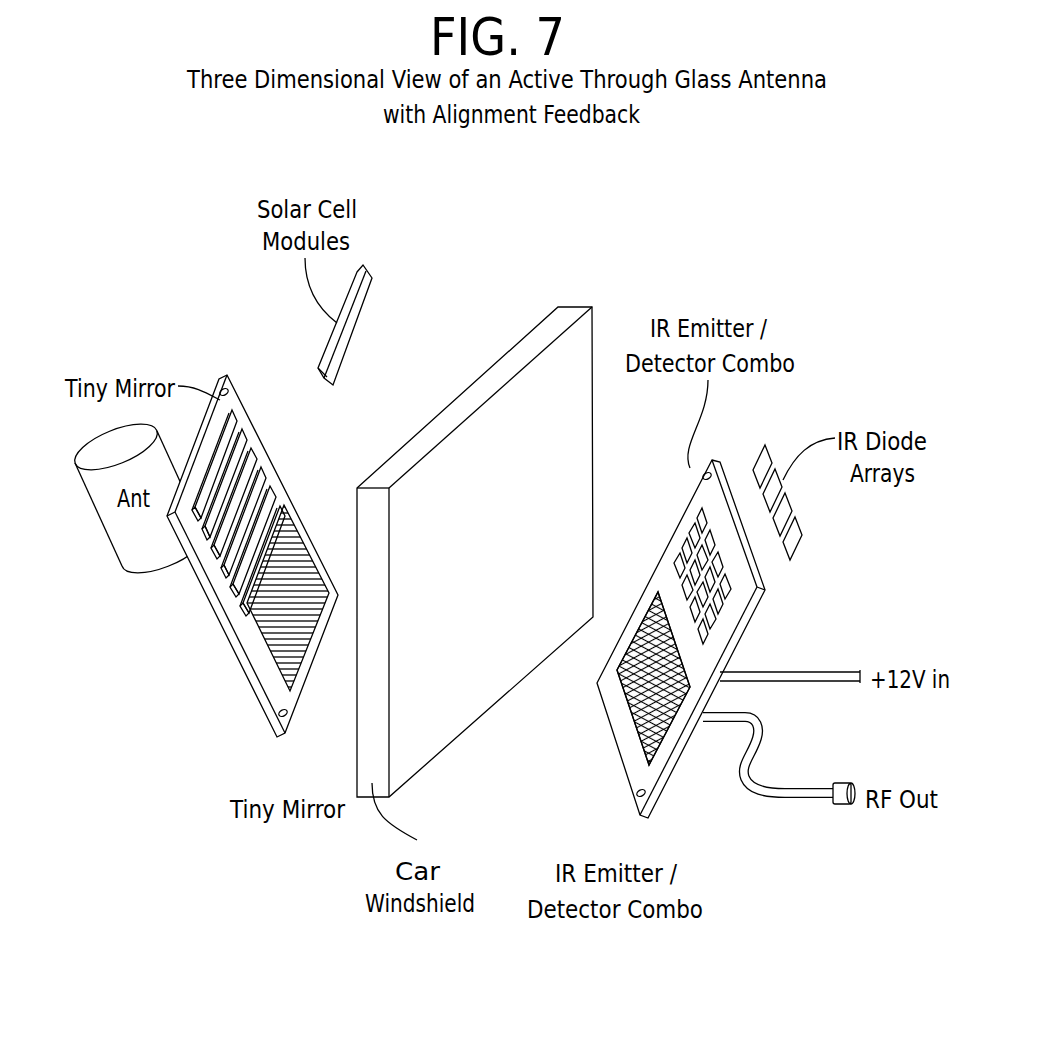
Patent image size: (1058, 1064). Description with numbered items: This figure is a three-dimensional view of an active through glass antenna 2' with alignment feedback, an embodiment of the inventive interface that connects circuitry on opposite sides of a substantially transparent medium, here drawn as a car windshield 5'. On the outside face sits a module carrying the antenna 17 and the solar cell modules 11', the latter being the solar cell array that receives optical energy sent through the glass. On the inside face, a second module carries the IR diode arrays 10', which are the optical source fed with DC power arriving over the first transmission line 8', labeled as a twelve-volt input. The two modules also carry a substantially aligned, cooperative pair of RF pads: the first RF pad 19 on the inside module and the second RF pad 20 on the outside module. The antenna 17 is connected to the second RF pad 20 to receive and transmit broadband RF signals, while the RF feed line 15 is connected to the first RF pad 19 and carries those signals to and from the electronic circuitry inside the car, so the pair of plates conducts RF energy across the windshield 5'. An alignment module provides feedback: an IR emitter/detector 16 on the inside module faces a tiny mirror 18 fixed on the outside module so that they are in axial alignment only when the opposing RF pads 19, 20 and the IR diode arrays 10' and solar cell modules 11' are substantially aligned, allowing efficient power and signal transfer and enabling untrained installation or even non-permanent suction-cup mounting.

The active through glass antenna 2' is at (660, 212).
The car windshield 5' is at (475, 552).
The first transmission line 8' is at (790, 701).
The IR diode arrays 10' is at (674, 576).
The solar cell modules 11' is at (255, 556).
The RF feed line 15 is at (795, 800).
The IR emitter/detector 16 is at (640, 793).
The antenna 17 is at (187, 563).
The tiny mirror (lower) 18 is at (287, 717).
The first RF pad 19 is at (637, 697).
The second RF pad 20 is at (298, 632).